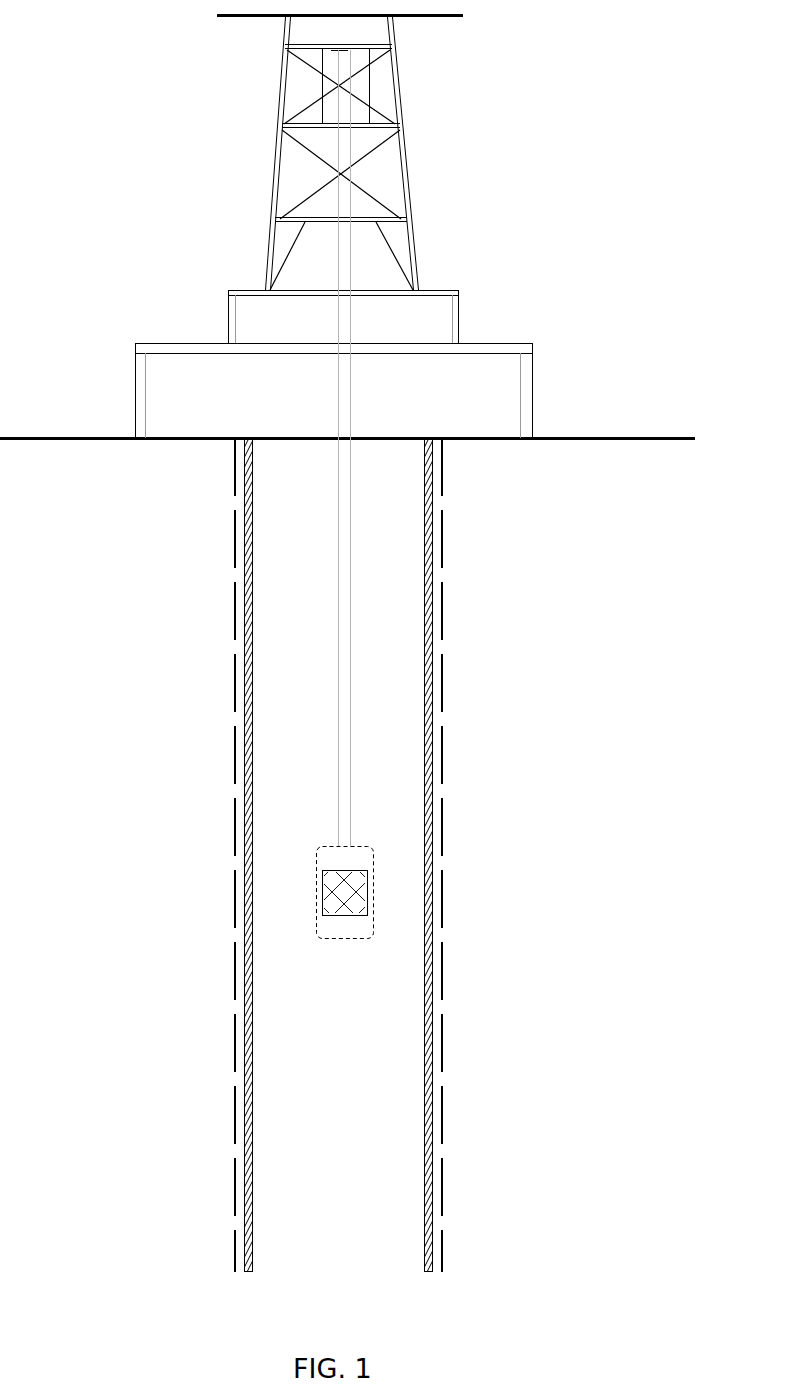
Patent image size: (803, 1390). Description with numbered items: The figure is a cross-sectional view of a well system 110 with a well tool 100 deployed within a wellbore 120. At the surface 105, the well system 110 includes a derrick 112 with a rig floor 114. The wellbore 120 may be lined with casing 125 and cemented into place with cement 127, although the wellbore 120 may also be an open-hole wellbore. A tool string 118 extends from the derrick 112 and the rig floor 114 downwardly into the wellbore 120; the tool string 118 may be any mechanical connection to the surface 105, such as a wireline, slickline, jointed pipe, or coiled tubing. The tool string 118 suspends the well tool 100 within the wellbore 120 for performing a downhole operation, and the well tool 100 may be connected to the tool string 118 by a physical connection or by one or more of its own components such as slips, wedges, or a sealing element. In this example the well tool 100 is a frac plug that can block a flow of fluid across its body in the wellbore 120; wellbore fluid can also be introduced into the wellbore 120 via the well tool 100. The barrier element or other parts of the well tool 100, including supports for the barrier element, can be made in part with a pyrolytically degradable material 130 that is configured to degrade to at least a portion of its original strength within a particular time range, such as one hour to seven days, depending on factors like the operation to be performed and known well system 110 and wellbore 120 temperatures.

The well tool 100 is at (366, 860).
The surface 105 is at (93, 436).
The well system 110 is at (583, 150).
The derrick 112 is at (277, 190).
The rig floor 114 is at (180, 343).
The tool string 118 is at (344, 744).
The wellbore 120 is at (395, 649).
The casing 125 is at (425, 1075).
The cement 127 is at (442, 950).
The pyrolytically degradable material 130 is at (340, 888).